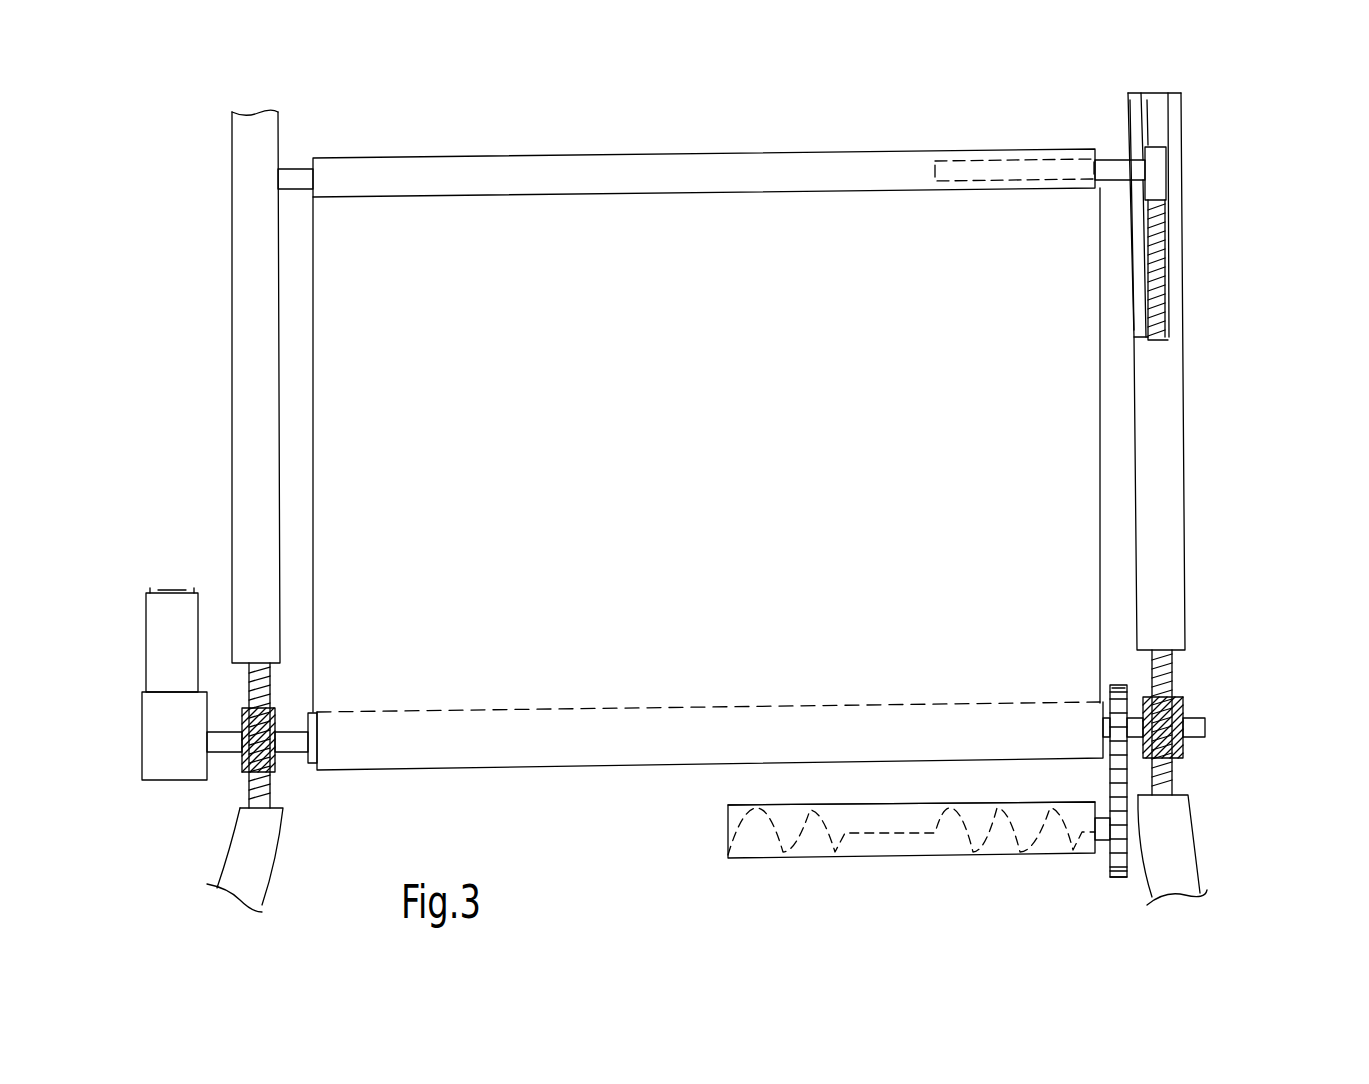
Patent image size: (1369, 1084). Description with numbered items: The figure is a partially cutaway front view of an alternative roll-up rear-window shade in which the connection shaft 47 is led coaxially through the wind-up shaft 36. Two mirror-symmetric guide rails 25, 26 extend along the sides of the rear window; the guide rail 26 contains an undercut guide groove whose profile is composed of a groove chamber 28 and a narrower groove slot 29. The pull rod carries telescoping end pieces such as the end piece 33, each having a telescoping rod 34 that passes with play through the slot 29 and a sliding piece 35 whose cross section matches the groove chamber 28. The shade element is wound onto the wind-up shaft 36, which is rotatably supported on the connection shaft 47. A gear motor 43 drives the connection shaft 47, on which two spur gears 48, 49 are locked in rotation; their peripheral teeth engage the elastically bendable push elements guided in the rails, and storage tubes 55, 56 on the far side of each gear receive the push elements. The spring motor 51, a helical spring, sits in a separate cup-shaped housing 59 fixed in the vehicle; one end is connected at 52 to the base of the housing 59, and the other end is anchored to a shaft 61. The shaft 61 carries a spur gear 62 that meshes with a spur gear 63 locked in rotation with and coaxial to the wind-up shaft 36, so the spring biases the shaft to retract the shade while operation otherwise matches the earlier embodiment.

The guide rail 25 is at (205, 402).
The guide rail 26 is at (1193, 462).
The groove chamber 28 is at (1155, 135).
The groove slot 29 is at (1137, 125).
The end piece 33 is at (1083, 128).
The telescoping rod 34 is at (1108, 165).
The sliding piece 35 is at (1156, 183).
The wind-up shaft 36 is at (378, 710).
The gear motor 43 is at (147, 640).
The connection shaft 47 is at (1193, 727).
The spur gear 48 is at (262, 722).
The spur gear 49 is at (1162, 718).
The spring motor 51 is at (775, 830).
The spring connection point 52 is at (728, 840).
The storage tube 55 is at (283, 840).
The storage tube 56 is at (1190, 822).
The housing 59 is at (728, 808).
The shaft 61 is at (1103, 838).
The spur gear 62 is at (1120, 870).
The spur gear 63 is at (1110, 688).